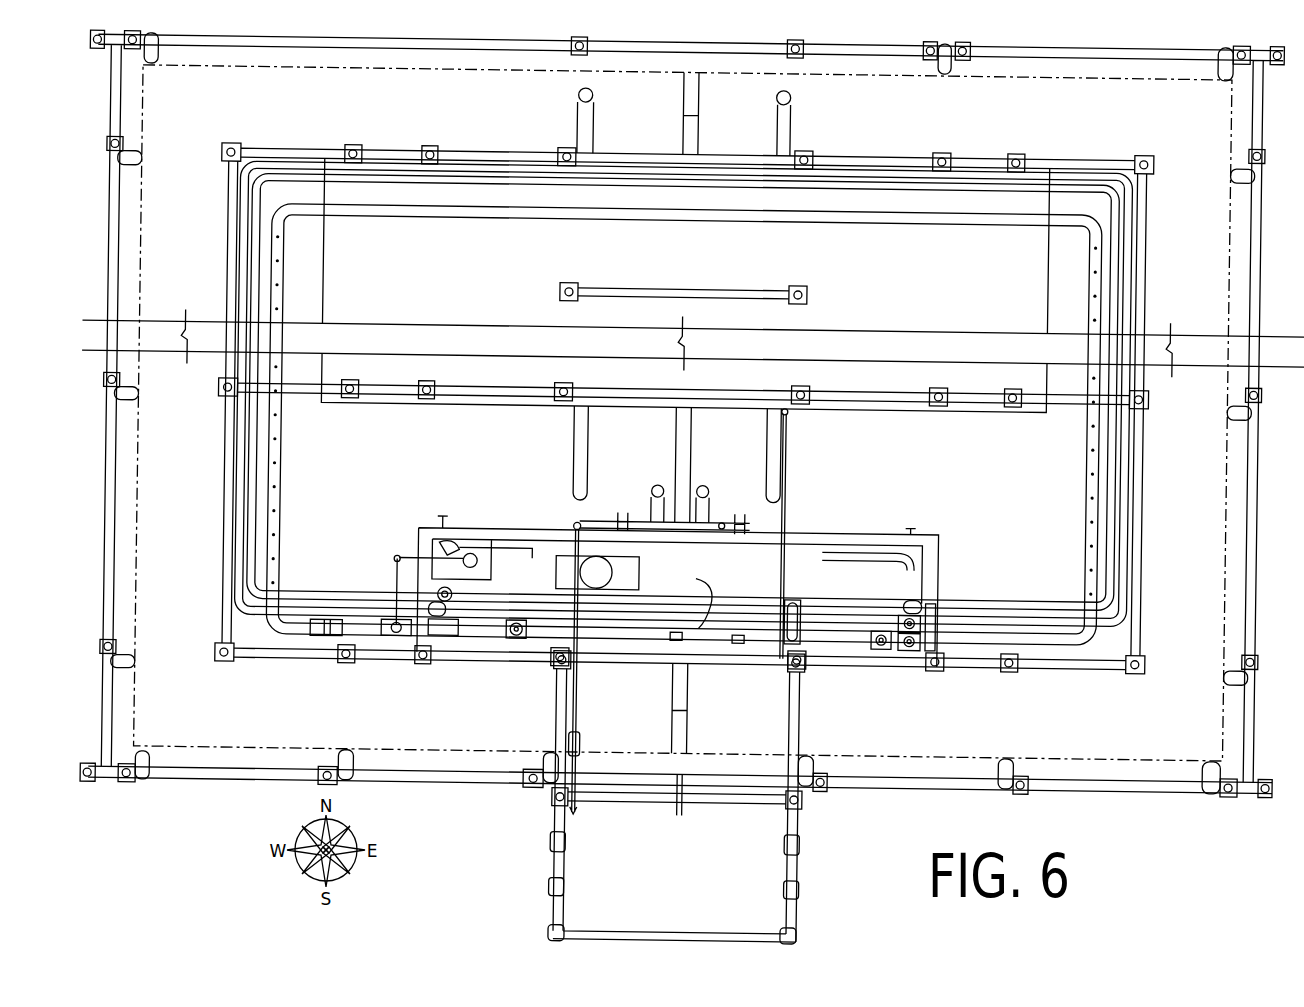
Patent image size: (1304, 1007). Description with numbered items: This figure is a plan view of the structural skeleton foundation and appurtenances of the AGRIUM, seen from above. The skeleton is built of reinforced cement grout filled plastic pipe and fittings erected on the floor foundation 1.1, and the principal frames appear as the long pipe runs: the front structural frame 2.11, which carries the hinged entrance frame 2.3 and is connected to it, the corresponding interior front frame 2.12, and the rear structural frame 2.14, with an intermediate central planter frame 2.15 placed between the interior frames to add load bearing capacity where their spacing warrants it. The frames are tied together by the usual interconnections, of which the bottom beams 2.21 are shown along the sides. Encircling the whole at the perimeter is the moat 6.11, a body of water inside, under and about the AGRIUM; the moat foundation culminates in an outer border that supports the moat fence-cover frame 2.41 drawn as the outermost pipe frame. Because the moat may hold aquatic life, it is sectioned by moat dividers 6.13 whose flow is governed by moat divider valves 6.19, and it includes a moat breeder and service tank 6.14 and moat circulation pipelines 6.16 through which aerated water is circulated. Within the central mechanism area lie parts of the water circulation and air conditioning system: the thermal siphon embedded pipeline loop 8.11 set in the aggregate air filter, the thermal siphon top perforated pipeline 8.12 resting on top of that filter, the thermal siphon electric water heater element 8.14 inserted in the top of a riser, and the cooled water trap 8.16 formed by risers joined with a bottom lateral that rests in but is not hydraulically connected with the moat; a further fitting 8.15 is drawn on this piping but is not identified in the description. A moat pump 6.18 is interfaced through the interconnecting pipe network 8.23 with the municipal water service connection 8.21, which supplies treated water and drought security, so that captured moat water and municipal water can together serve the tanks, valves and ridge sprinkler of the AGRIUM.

The floor foundation 1.1 is at (972, 254).
The front structural frame 2.11 is at (314, 664).
The interior front frame 2.12 is at (453, 399).
The rear structural frame 2.14 is at (482, 130).
The intermediate central planter frames 2.15 is at (692, 272).
The bottom beams 2.21 is at (1142, 525).
The entrance frame 2.3 is at (606, 799).
The moat fence-cover frame 2.41 is at (933, 782).
The moat 6.11 is at (1030, 102).
The moat dividers 6.13 is at (686, 139).
The moat breeder and service tank 6.14 is at (805, 556).
The moat circulation pipelines 6.16 is at (770, 104).
The moat pump 6.18 is at (589, 577).
The moat divider valves 6.19 is at (704, 496).
The thermal siphon embedded pipeline loop 8.11 is at (253, 504).
The thermal siphon top perforated pipeline 8.12 is at (279, 502).
The thermal siphon electric water heater element 8.14 is at (907, 648).
The valve 8.15 is at (523, 637).
The cooled water trap 8.16 is at (685, 596).
The municipal water service connection 8.21 is at (684, 816).
The interconnecting pipe network 8.23 is at (781, 557).